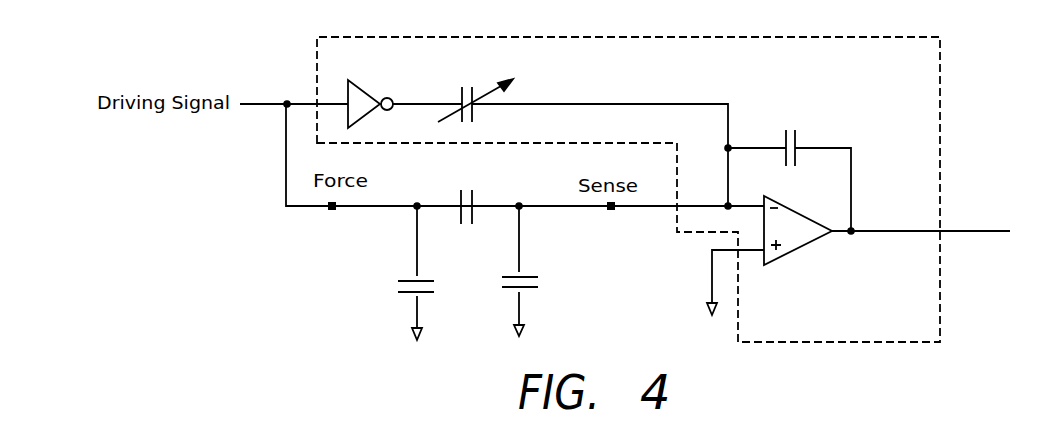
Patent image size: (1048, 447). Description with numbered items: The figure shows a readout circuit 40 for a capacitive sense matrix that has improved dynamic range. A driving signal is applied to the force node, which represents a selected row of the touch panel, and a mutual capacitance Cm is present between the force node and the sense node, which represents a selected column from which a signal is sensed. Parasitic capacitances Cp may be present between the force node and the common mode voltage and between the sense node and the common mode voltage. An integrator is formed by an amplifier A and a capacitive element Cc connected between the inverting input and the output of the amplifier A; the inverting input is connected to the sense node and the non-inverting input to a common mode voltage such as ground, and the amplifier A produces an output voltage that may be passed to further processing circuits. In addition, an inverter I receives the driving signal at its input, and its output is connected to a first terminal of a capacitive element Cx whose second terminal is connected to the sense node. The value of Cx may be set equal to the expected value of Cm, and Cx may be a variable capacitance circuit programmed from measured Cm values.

The readout circuit 40 is at (678, 189).
The inverter I is at (370, 91).
The capacitive element Cx is at (475, 92).
The capacitive element Cc is at (792, 134).
The mutual capacitance Cm is at (466, 191).
The parasitic capacitance Cp is at (450, 273).
The amplifier A is at (798, 230).